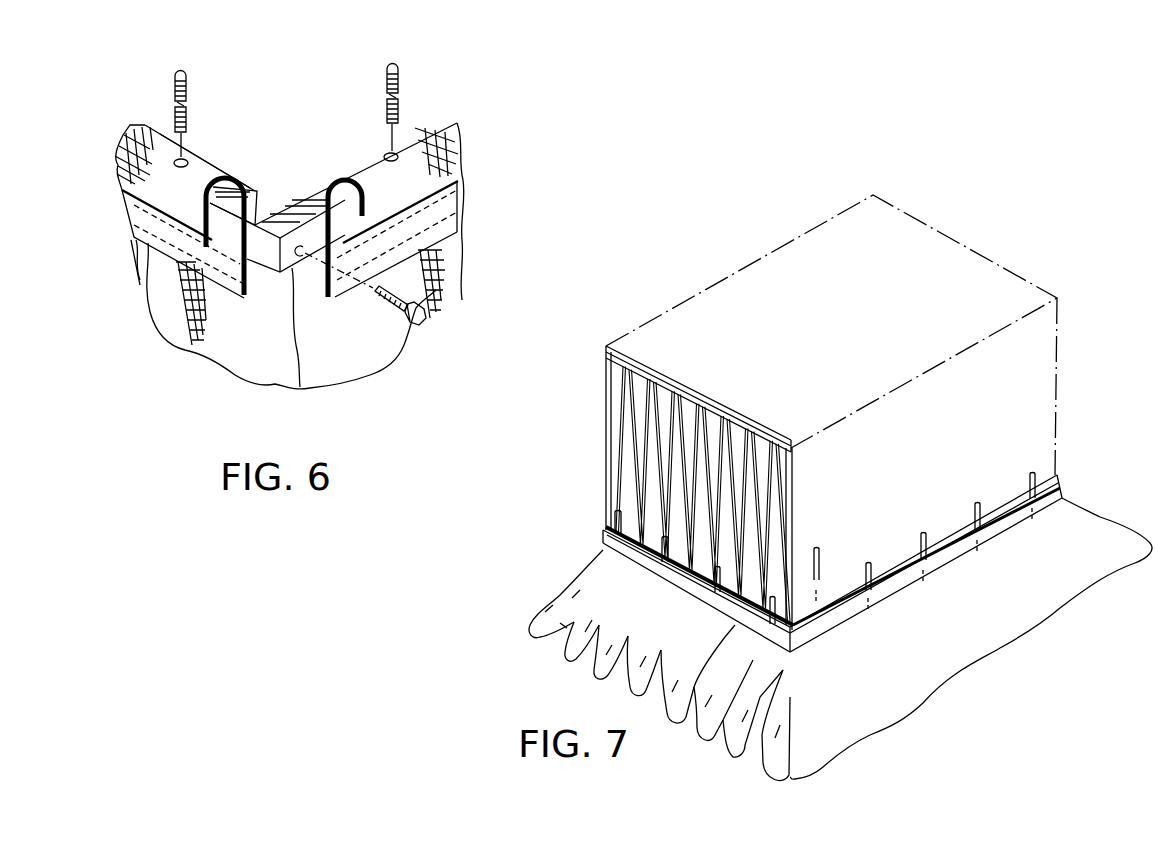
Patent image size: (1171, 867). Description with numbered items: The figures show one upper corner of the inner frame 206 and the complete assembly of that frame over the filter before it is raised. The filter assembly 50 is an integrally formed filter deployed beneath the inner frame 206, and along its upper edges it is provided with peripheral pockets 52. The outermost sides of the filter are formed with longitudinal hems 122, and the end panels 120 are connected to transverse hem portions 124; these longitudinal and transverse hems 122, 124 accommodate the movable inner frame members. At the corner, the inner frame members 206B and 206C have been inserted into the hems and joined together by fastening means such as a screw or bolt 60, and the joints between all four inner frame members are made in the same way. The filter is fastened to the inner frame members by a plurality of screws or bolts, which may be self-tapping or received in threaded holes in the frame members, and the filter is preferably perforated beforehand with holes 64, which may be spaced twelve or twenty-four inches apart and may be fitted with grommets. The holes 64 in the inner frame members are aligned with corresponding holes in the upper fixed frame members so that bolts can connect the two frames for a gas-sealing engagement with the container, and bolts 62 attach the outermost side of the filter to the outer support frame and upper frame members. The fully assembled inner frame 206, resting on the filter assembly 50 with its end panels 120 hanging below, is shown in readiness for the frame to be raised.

In FIG. 6, the filter assembly 50 is at (258, 380).
In FIG. 7, the filter assembly 50 is at (1105, 520).
In FIG. 6, the peripheral pockets 52 is at (228, 166).
In FIG. 7, the peripheral pockets 52 is at (575, 648).
In FIG. 6, the screw or bolt 60 is at (392, 314).
In FIG. 6, the bolts 62 is at (187, 83).
In FIG. 6, the holes 64 is at (188, 162).
In FIG. 7, the end panels 120 is at (610, 562).
In FIG. 6, the longitudinal hems 122 is at (141, 233).
In FIG. 6, the transverse hem portions 124 is at (436, 215).
In FIG. 7, the inner frame 206 is at (605, 527).
In FIG. 6, the inner frame member 206B is at (240, 232).
In FIG. 6, the inner frame member 206C is at (289, 208).